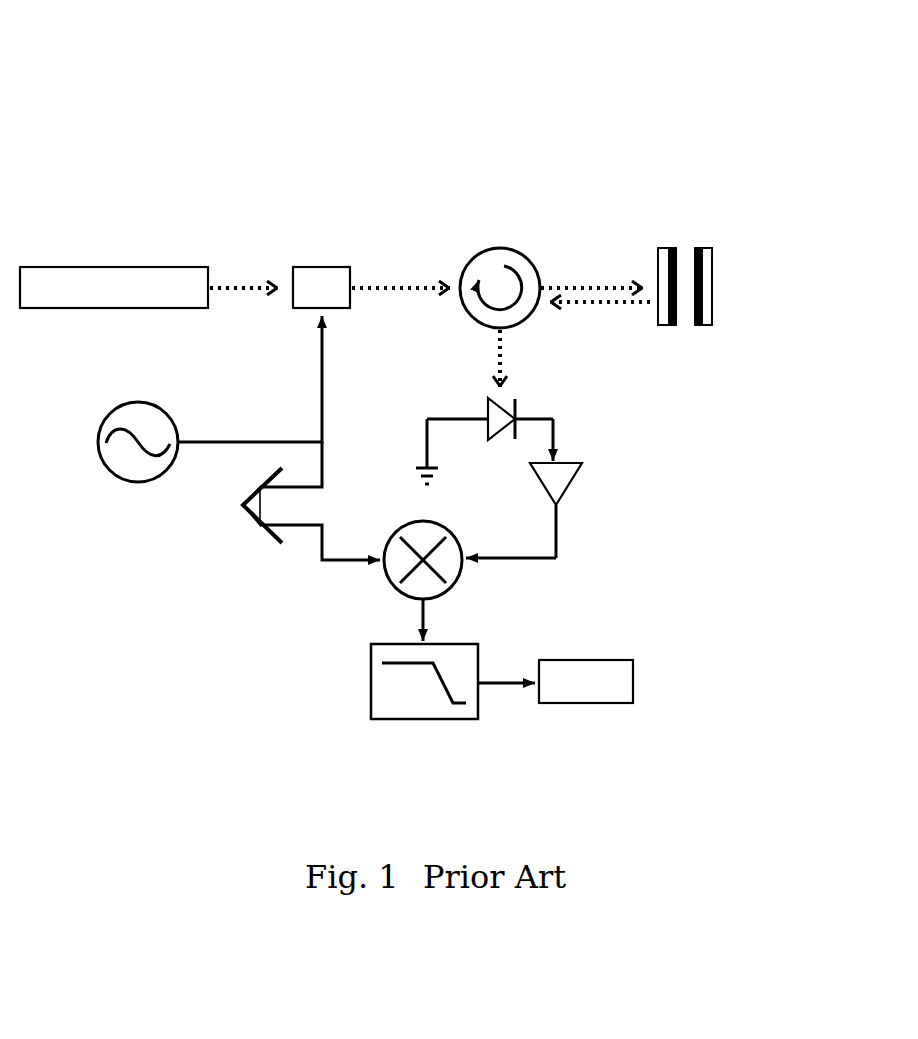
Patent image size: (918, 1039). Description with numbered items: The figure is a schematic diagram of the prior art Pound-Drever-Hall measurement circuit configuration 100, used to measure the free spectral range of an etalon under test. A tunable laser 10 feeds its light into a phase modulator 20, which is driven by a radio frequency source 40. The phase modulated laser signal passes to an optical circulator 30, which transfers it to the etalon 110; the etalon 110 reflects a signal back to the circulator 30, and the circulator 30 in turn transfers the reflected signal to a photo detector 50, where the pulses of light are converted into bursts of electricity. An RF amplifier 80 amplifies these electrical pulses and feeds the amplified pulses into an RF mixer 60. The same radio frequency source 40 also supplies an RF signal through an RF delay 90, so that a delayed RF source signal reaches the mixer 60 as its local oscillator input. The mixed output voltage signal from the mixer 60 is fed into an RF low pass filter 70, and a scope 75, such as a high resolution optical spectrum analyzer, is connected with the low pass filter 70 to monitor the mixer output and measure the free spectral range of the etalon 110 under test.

The circuit configuration 100 is at (146, 103).
The tunable laser 10 is at (66, 257).
The phase modulator 20 is at (285, 256).
The optical circulator 30 is at (463, 240).
The etalon 110 is at (692, 238).
The photo detector 50 is at (533, 397).
The RF amplifier 80 is at (575, 500).
The RF mixer 60 is at (402, 595).
The radio frequency source 40 is at (104, 412).
The RF delay 90 is at (242, 532).
The RF low pass filter 70 is at (493, 646).
The scope 75 is at (653, 653).